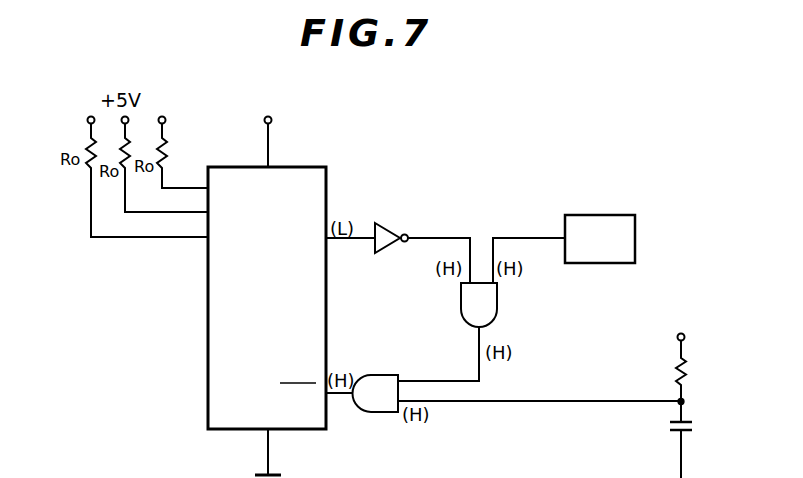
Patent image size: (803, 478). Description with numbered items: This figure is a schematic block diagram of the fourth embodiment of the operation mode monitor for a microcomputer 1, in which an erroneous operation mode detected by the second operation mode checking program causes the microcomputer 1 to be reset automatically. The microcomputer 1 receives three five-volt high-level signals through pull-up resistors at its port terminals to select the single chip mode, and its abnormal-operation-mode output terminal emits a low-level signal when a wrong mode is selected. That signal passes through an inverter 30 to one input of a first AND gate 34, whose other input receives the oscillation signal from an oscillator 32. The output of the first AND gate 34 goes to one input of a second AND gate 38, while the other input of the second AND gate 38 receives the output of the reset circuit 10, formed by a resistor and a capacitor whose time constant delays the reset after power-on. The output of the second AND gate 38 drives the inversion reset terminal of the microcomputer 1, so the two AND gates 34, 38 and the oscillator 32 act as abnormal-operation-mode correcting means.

The microcomputer 1 is at (305, 167).
The inverter 30 is at (388, 222).
The oscillator 32 is at (613, 214).
The first AND gate 34 is at (497, 306).
The second AND gate 38 is at (373, 413).
The reset circuit 10 is at (662, 413).